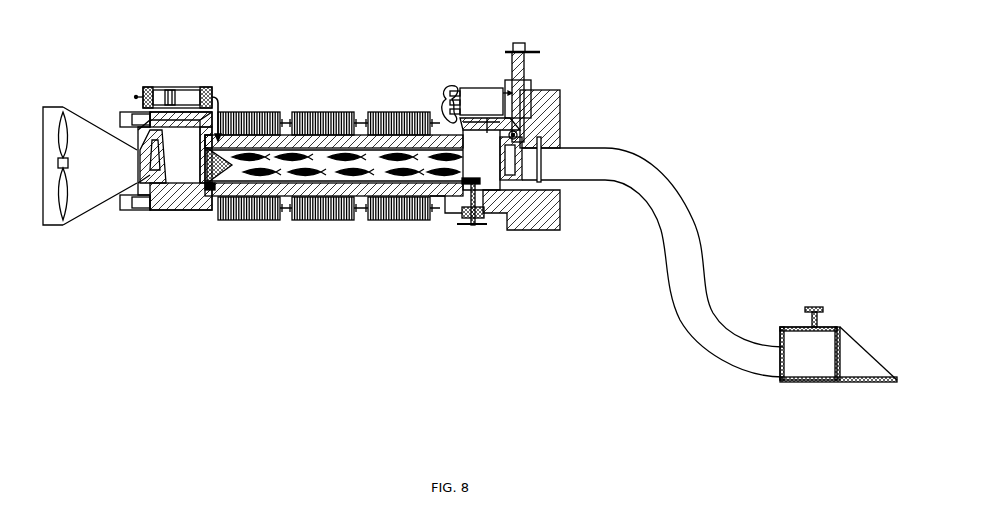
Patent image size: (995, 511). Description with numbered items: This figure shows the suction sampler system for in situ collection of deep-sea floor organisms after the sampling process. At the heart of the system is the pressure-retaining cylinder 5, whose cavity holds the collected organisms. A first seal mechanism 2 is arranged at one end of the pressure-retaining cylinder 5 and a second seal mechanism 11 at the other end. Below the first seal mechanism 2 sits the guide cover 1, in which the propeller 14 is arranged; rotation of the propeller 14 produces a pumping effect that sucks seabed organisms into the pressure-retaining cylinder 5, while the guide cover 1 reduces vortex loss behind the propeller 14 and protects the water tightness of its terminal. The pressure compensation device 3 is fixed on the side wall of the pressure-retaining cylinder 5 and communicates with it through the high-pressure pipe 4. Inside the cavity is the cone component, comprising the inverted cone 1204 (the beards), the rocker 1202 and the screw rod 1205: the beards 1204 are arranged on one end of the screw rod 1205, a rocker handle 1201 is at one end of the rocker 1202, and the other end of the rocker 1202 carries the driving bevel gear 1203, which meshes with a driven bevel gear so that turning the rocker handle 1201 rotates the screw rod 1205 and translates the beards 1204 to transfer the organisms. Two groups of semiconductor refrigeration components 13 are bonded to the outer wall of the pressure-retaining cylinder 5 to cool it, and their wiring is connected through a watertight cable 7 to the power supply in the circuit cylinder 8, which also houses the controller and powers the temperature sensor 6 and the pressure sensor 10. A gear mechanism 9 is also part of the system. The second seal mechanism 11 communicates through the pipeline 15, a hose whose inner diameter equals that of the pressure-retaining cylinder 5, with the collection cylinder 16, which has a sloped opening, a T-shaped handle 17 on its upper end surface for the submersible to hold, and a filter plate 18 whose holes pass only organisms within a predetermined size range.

The guide cover 1 is at (102, 137).
The first seal mechanism 2 is at (148, 118).
The pressure compensation device 3 is at (198, 87).
The high-pressure pipe 4 is at (204, 140).
The pressure-retaining cylinder 5 is at (275, 157).
The temperature sensor 6 is at (437, 122).
The watertight cable 7 is at (438, 93).
The circuit cylinder 8 is at (480, 88).
The gear mechanism 9 is at (508, 73).
The pressure sensor 10 is at (482, 137).
The second seal mechanism 11 is at (556, 205).
The semiconductor refrigeration component 13 is at (342, 221).
The propeller 14 is at (63, 205).
The pipeline 15 is at (655, 210).
The collection cylinder 16 is at (792, 323).
The T-shaped handle 17 is at (818, 308).
The filter plate 18 is at (837, 355).
The rocker handle 1201 is at (480, 227).
The rocker 1202 is at (473, 227).
The driving bevel gear 1203 is at (490, 203).
The inverted cone 1204 is at (213, 188).
The screw rod 1205 is at (318, 179).